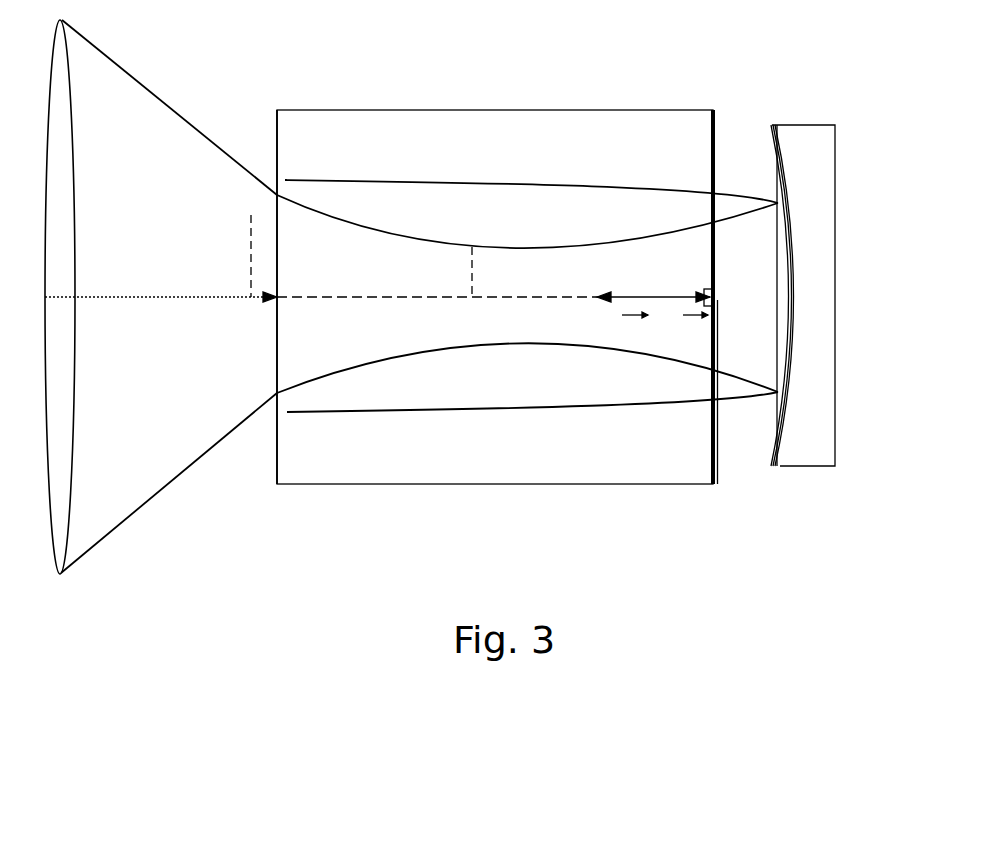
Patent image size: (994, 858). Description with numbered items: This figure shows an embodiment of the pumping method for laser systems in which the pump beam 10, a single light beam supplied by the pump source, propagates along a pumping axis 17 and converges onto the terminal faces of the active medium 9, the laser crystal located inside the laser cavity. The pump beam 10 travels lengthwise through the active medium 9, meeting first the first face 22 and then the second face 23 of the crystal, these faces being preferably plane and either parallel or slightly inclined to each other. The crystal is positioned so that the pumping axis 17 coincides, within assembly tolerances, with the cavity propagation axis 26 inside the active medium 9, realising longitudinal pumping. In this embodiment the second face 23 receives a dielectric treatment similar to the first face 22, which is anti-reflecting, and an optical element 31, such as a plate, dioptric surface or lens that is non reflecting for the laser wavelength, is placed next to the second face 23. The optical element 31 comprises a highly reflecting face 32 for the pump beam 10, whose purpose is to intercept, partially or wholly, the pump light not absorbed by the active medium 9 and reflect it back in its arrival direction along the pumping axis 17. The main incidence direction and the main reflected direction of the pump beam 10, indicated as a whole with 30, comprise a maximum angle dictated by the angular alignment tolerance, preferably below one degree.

The active medium 9 is at (491, 494).
The pump beam 10 is at (200, 135).
The pumping axis 17 is at (160, 292).
The first face 22 is at (281, 473).
The second face 23 is at (706, 455).
The cavity propagation axis 26 is at (405, 300).
The main incidence direction and main reflected direction 30 is at (663, 290).
The optical element 31 is at (823, 198).
The highly reflecting face 32 is at (787, 425).